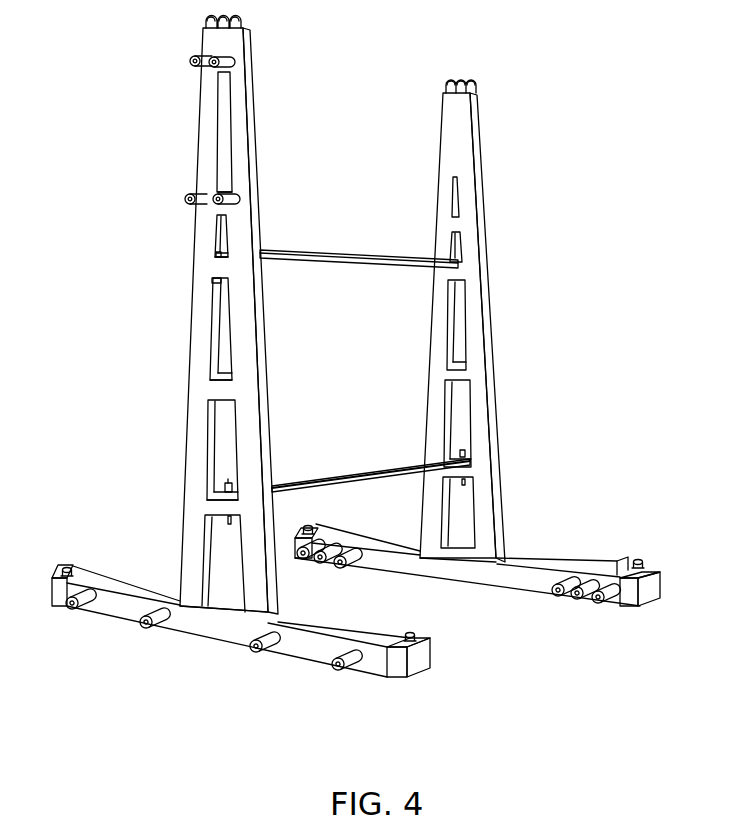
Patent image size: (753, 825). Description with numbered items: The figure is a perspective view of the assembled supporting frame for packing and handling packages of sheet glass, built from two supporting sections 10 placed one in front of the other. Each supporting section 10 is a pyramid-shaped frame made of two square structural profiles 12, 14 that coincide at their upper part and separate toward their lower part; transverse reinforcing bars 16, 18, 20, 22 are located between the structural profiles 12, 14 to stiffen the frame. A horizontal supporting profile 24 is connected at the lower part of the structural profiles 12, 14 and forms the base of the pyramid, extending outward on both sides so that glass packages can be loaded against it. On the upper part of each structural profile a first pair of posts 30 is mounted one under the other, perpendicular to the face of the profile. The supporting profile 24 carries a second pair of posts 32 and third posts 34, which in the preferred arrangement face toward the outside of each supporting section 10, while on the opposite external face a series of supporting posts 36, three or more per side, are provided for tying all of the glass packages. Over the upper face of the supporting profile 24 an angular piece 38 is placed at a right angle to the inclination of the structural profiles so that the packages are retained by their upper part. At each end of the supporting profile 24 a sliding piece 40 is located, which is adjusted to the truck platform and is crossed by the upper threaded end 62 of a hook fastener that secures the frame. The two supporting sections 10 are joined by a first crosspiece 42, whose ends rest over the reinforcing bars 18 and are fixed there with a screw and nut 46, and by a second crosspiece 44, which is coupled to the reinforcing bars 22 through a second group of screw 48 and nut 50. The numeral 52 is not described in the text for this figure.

The supporting section 10 is at (138, 115).
The square structural profile 12 is at (198, 390).
The square structural profile 14 is at (255, 402).
The reinforcing bar 16 is at (229, 212).
The reinforcing bar 18 is at (229, 268).
The reinforcing bar 20 is at (229, 392).
The reinforcing bar 22 is at (219, 510).
The supporting profile 24 is at (302, 648).
The first pair of posts 30 is at (236, 190).
The second pair of posts 32 is at (243, 647).
The third posts 34 is at (86, 610).
The supporting posts 36 is at (565, 603).
The angular piece 38 is at (590, 557).
The sliding piece 40 is at (55, 596).
The first crosspiece 42 is at (375, 256).
The second crosspiece 44 is at (213, 285).
The nut 46 is at (217, 258).
The screw 48 is at (221, 527).
The nut 50 is at (222, 482).
The second upright post 52 is at (462, 321).
The upper threaded end 62 is at (414, 639).